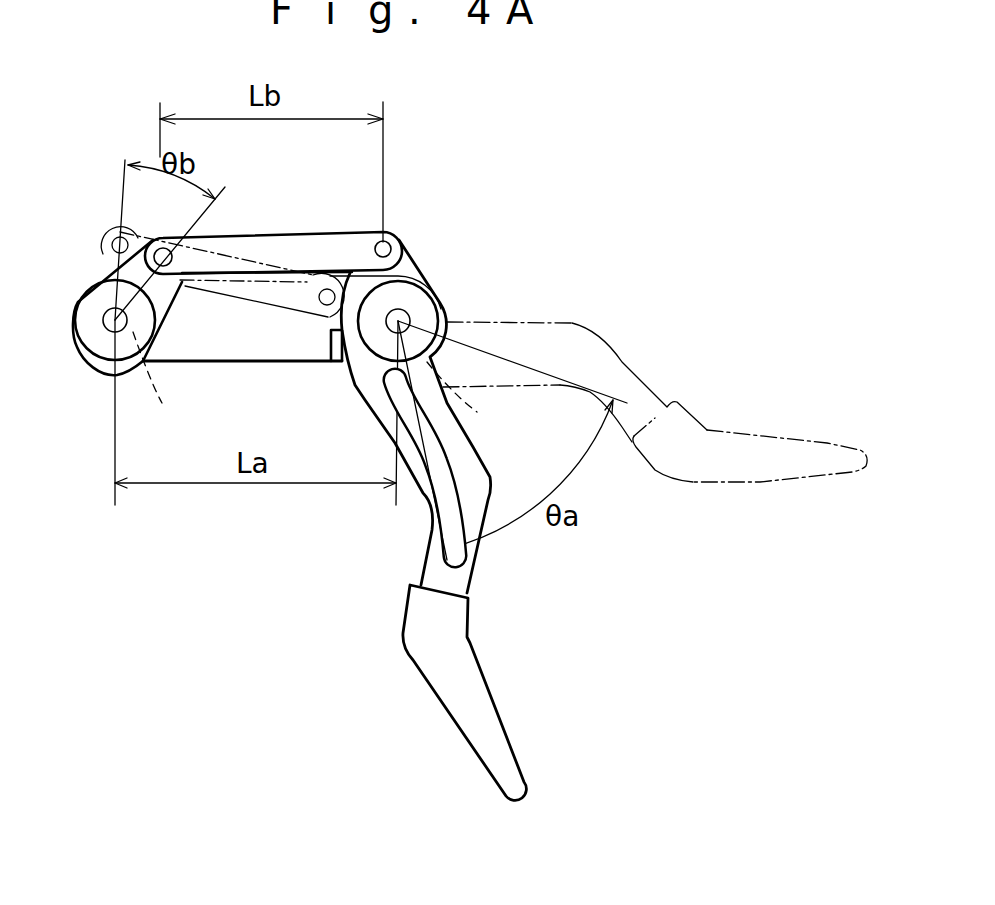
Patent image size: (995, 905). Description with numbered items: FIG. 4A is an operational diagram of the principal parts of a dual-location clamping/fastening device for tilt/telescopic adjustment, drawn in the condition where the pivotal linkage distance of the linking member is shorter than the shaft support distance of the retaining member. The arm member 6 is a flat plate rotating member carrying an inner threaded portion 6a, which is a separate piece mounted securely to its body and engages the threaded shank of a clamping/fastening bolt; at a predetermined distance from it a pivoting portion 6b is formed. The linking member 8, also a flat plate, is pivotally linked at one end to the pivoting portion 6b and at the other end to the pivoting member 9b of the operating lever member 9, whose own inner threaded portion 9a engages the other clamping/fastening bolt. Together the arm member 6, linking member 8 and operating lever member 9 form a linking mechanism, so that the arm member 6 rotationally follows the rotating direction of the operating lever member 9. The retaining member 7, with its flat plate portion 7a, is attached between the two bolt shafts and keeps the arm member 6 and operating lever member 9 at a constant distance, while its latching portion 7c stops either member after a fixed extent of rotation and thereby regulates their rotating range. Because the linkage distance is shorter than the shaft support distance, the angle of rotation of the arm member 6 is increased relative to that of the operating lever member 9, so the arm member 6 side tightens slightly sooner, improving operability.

The arm member 6 is at (75, 335).
The inner threaded portion 6a is at (93, 338).
The pivoting portion 6b is at (182, 263).
The retaining member 7 is at (258, 366).
The flat plate portion 7a is at (323, 389).
The latching portion 7c is at (334, 366).
The linking member 8 is at (300, 233).
The operating lever member 9 is at (417, 667).
The inner threaded portion 9a is at (438, 301).
The pivoting member 9b is at (400, 239).